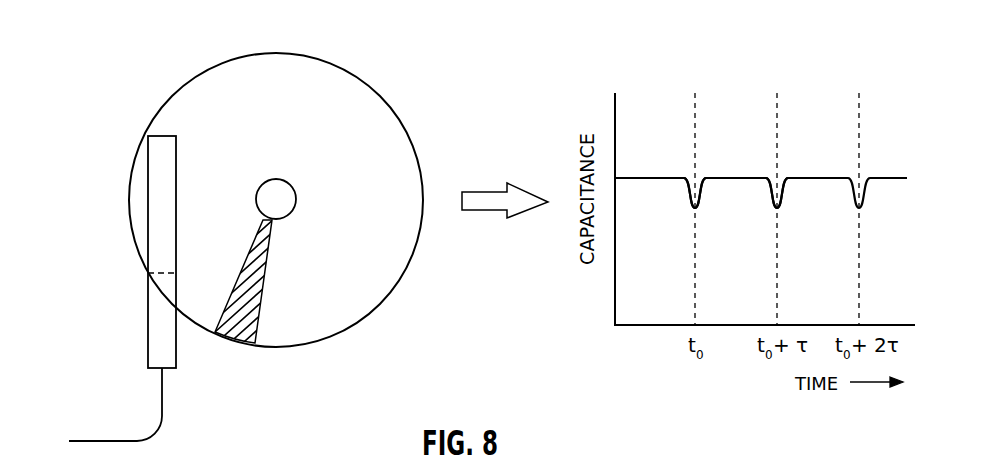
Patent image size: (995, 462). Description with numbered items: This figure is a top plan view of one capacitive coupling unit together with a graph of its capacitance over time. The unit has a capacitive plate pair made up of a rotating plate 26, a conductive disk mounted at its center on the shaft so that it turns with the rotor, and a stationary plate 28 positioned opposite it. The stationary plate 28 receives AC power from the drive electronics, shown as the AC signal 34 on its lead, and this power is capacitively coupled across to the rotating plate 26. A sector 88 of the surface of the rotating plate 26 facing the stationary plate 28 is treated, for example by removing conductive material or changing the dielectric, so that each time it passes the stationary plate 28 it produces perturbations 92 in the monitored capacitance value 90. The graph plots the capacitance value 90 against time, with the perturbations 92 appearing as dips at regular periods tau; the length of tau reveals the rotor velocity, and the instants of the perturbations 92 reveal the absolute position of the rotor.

The rotating plate 26 is at (358, 105).
The stationary plate 28 is at (163, 170).
The AC signal 34 is at (100, 437).
The sector 88 is at (231, 344).
The capacitance value 90 is at (657, 178).
The perturbations 92 is at (768, 163).